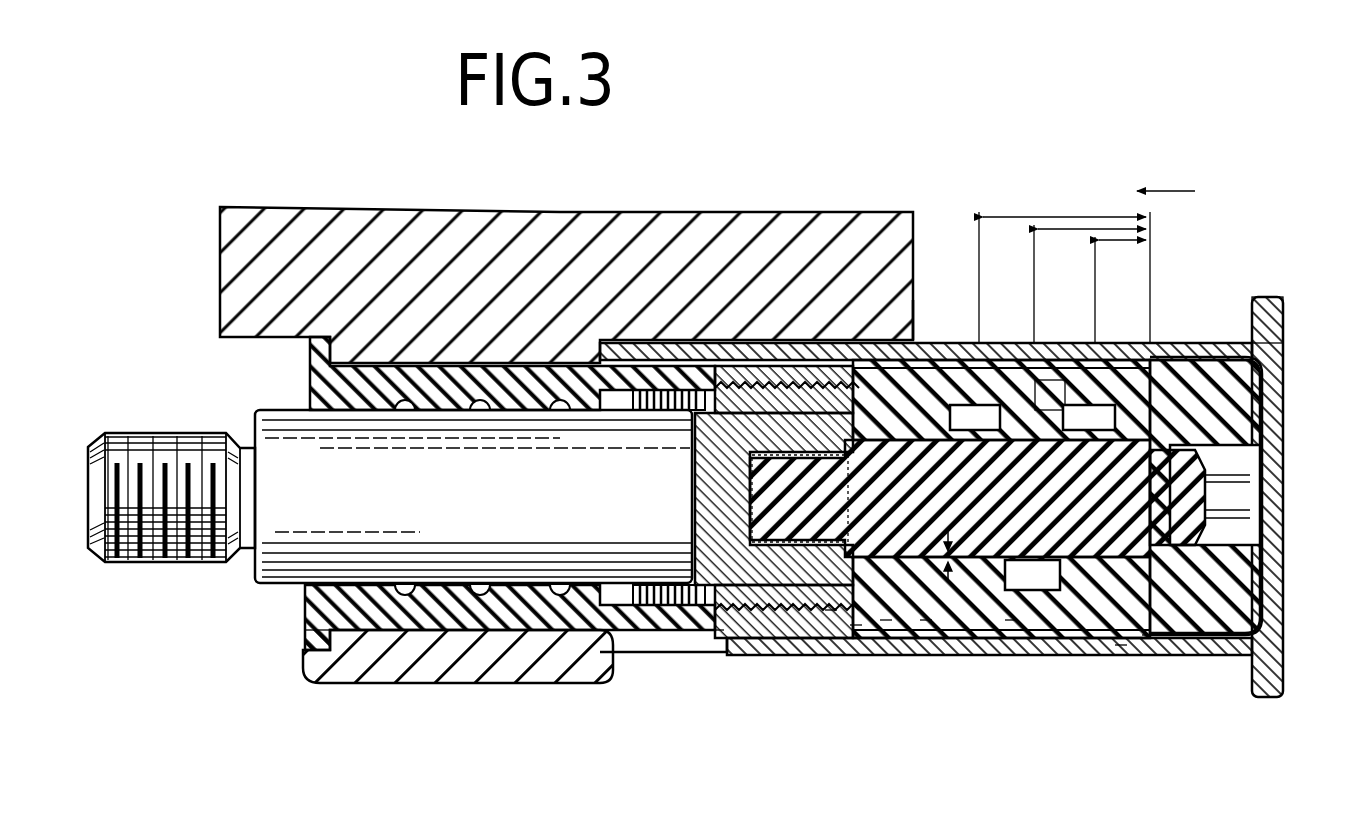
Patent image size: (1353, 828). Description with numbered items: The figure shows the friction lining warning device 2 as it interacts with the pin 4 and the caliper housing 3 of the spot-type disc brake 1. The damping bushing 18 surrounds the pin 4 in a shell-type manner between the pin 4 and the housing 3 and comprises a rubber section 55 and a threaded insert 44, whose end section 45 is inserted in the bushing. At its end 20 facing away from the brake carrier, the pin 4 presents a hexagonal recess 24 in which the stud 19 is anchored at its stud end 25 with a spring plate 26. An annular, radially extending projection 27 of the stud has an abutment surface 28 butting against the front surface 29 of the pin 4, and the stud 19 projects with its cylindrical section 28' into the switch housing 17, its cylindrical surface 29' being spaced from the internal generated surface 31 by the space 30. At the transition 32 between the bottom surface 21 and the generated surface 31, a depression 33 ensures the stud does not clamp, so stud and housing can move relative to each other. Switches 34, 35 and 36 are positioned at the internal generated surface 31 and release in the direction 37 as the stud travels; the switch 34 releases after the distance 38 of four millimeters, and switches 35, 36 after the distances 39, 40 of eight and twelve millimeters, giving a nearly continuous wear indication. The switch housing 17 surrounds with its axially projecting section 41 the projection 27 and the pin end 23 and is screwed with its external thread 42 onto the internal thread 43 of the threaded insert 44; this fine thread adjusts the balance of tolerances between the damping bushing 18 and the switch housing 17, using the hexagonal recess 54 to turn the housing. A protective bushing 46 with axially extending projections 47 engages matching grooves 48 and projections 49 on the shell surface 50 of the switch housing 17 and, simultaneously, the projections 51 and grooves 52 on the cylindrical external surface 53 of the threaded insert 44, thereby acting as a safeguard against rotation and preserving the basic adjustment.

The spot-type disc brake 1 is at (182, 312).
The friction lining warning device 2 is at (1250, 275).
The caliper housing 3 is at (400, 657).
The pin 4 is at (266, 585).
The switch housing 17 is at (1180, 395).
The damping bushing 18 is at (432, 378).
The stud 19 is at (1148, 340).
The front surface 20 is at (1180, 440).
The bottom surface 21 is at (1232, 468).
The pin end 23 is at (690, 622).
The hexagonal recess 24 is at (692, 484).
The stud end 25 is at (770, 637).
The spring plate 26 is at (720, 622).
The projection 27 is at (855, 627).
The abutment surface 28 is at (817, 651).
The cylindrical section 28' is at (1025, 656).
The front surface 29 is at (885, 656).
The cylindrical surface 29' is at (1058, 358).
The space 30 is at (960, 632).
The internal generated surface 31 is at (940, 372).
The transition 32 is at (1148, 637).
The depression 33 is at (1175, 637).
The switch 34 is at (1100, 420).
The switch 35 is at (1075, 602).
The switch 36 is at (992, 408).
The direction 37 is at (1165, 190).
The distance 38 is at (1126, 244).
The distance 39 is at (1078, 233).
The distance 40 is at (1022, 222).
The axially projecting section 41 is at (780, 360).
The external thread 42 is at (920, 340).
The internal thread 43 is at (650, 350).
The threaded insert 44 is at (826, 385).
The end section 45 is at (640, 632).
The protective bushing 46 is at (1284, 332).
The projections 47 is at (1060, 622).
The grooves 48 is at (1120, 647).
The projections 49 is at (925, 622).
The shell surface 50 is at (1195, 637).
The projections 51 is at (728, 350).
The grooves 52 is at (705, 355).
The cylindrical external surface 53 is at (680, 355).
The hexagonal recess 54 is at (1250, 497).
The rubber section 55 is at (302, 618).